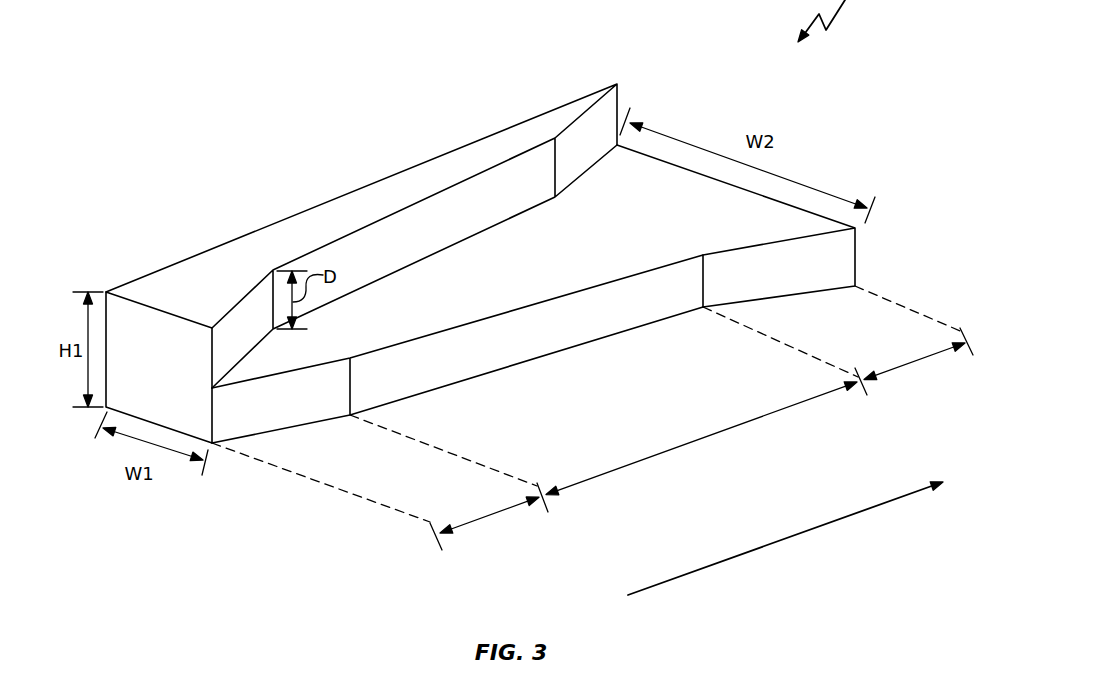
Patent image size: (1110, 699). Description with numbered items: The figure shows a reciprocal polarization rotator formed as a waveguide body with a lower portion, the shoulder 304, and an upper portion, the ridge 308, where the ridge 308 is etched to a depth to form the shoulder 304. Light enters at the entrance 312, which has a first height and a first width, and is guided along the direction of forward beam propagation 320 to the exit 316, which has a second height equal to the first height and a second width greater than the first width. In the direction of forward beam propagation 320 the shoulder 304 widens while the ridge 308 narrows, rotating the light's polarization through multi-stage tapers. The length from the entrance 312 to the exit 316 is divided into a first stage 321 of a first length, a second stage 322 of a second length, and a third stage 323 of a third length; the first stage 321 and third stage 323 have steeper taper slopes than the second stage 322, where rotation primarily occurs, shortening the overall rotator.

The shoulder 304 is at (483, 288).
The ridge 308 is at (378, 200).
The entrance 312 is at (150, 317).
The exit 316 is at (858, 255).
The forward beam propagation 320 is at (790, 537).
The first stage 321 is at (483, 523).
The second stage 322 is at (673, 450).
The third stage 323 is at (897, 370).